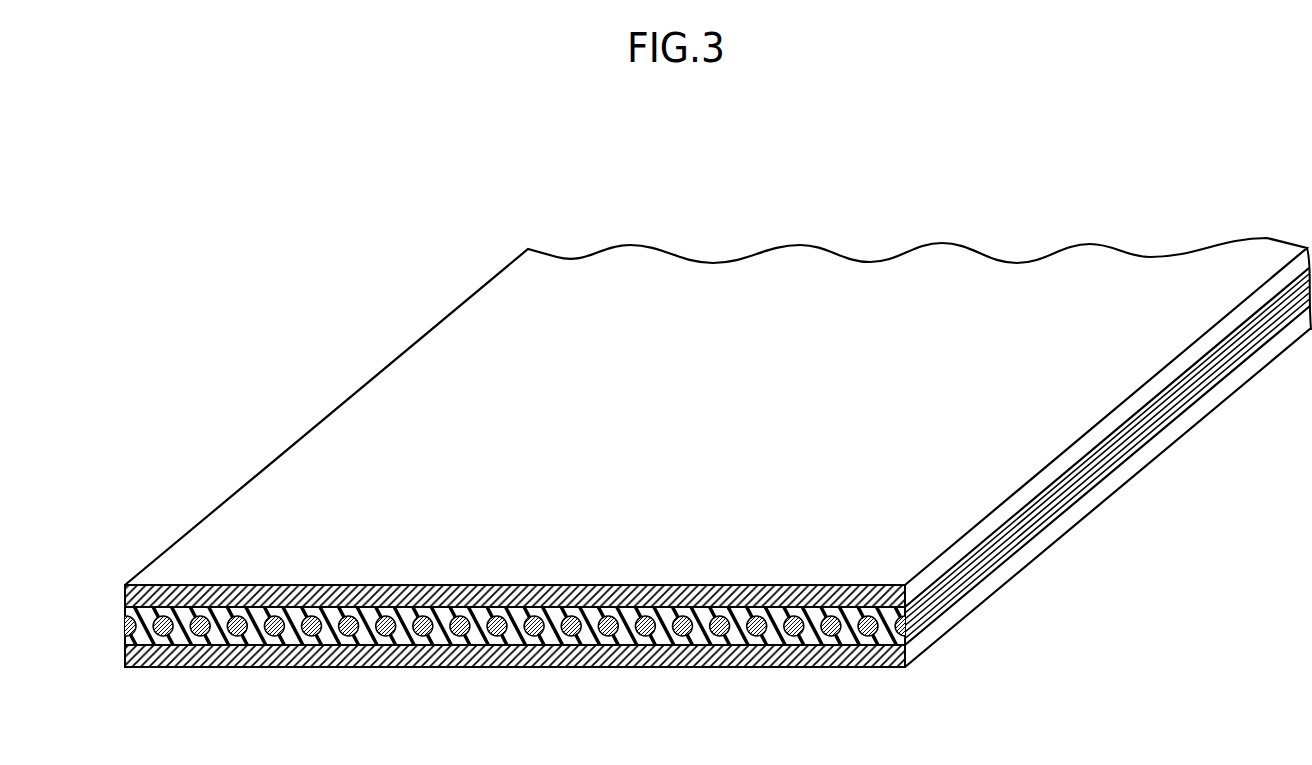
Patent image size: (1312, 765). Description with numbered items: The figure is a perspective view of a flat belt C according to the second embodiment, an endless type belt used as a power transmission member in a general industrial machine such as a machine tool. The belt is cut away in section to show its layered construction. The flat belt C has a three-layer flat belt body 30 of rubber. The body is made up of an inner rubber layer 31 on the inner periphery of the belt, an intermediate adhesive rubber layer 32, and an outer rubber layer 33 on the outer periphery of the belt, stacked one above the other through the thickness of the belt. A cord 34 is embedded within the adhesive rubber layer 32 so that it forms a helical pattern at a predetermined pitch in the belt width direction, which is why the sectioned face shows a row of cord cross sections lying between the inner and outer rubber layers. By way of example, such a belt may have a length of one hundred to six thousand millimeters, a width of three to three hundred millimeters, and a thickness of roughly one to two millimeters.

The flat belt body 30 is at (383, 371).
The inner rubber layer 31 is at (577, 668).
The adhesive rubber layer 32 is at (135, 608).
The outer rubber layer 33 is at (600, 586).
The cord 34 is at (127, 627).
The flat belt C is at (538, 188).